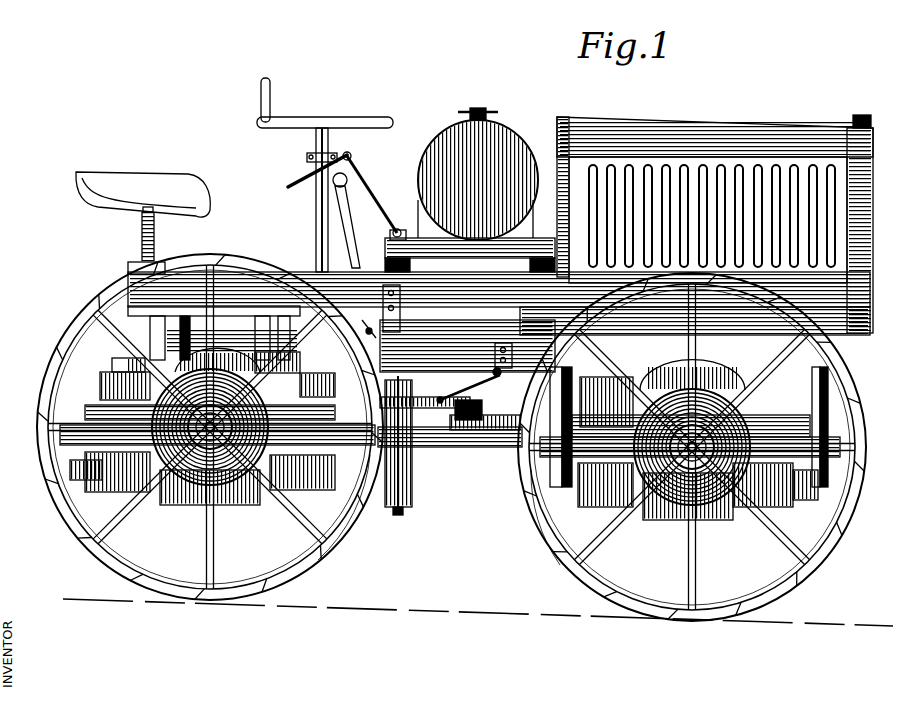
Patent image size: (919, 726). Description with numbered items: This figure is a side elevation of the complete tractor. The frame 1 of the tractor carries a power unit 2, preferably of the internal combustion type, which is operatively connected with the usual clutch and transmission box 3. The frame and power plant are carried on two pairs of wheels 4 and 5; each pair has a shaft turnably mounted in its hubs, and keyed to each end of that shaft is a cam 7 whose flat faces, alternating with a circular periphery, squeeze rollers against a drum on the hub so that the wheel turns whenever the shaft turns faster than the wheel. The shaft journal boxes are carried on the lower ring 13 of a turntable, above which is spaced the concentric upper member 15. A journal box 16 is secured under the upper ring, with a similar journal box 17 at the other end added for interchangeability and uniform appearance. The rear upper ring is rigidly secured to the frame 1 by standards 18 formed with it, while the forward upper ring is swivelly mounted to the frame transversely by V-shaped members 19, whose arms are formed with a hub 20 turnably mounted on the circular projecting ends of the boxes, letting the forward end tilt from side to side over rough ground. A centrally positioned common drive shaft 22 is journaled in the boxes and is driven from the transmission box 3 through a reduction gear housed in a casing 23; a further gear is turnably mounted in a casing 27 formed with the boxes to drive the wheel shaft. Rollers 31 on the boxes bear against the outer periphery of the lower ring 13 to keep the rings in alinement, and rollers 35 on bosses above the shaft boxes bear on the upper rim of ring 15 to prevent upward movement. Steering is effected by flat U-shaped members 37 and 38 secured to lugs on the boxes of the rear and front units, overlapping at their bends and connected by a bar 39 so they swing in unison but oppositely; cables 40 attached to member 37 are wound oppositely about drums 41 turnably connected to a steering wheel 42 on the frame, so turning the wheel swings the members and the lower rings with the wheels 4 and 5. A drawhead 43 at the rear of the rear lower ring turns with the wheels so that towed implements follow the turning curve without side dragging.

The frame 1 is at (305, 275).
The power unit 2 is at (762, 150).
The clutch and transmission box 3 is at (498, 375).
The wheels 4 is at (742, 603).
The wheels 5 is at (170, 585).
The cam 7 is at (195, 470).
The lower ring 13 is at (600, 470).
The upper member 15 is at (118, 362).
The journal box 16 is at (355, 497).
The journal box 17 is at (95, 405).
The standards 18 is at (165, 335).
The V-shaped members 19 is at (566, 372).
The hub 20 is at (835, 488).
The common drive shaft 22 is at (488, 448).
The casing 23 is at (400, 507).
The casing 27 is at (240, 512).
The rollers 31 is at (300, 465).
The rollers 35 is at (228, 366).
The U-shaped member 37 is at (430, 447).
The U-shaped member 38 is at (510, 447).
The bar 39 is at (455, 448).
The cables 40 is at (470, 435).
The drums 41 is at (369, 328).
The steering wheel 42 is at (322, 120).
The drawhead 43 is at (80, 470).